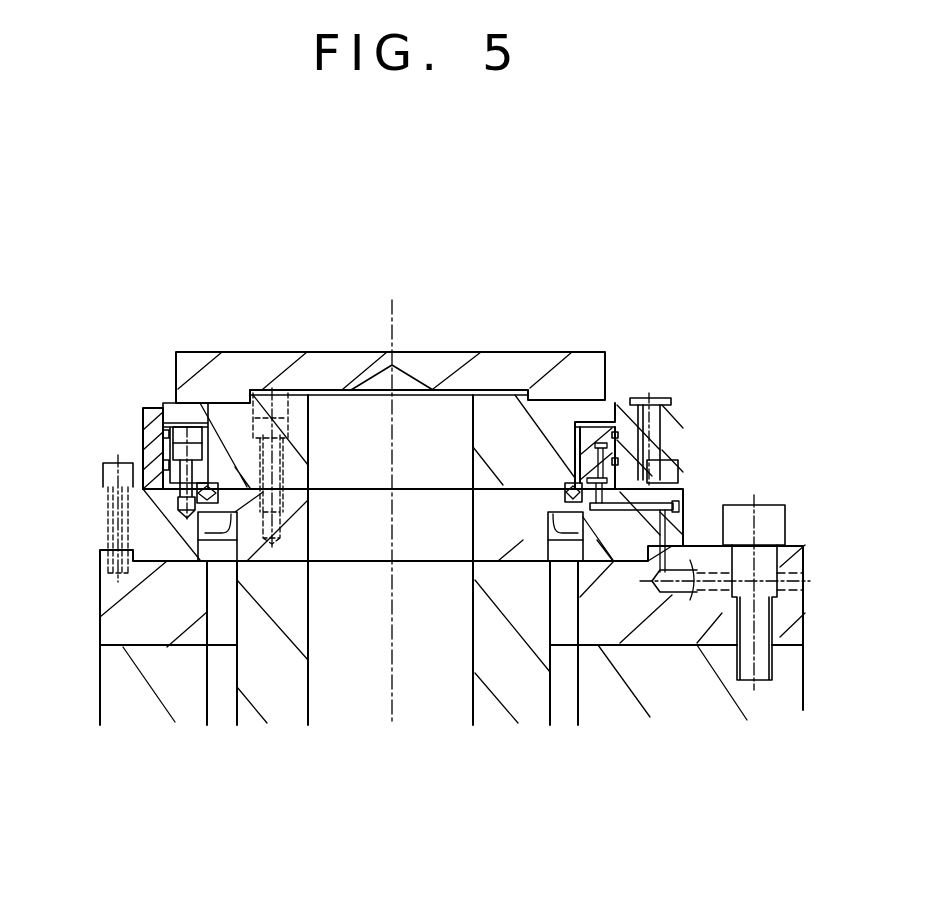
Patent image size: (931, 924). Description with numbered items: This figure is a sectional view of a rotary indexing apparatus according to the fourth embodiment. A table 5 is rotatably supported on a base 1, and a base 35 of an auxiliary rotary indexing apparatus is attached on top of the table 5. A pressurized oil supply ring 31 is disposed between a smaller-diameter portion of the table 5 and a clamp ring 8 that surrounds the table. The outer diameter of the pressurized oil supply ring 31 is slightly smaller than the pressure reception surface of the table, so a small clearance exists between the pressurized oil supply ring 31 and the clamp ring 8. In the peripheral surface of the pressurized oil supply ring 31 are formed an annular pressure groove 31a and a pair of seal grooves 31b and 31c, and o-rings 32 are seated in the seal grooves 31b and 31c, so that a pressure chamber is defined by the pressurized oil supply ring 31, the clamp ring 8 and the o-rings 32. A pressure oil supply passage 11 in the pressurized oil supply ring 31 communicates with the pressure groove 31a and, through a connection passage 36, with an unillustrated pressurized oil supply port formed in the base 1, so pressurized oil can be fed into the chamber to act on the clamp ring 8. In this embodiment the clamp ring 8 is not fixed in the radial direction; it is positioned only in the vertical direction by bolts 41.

The base 1 is at (785, 692).
The table 5 is at (499, 412).
The clamp ring 8 is at (157, 408).
The pressure oil supply passage 11 is at (572, 471).
The pressurized oil supply ring 31 is at (597, 435).
The annular pressure groove 31a is at (165, 436).
The seal groove 31b is at (157, 426).
The seal groove 31c is at (165, 468).
The o-rings 32 is at (619, 436).
The base of auxiliary rotary indexing apparatus 35 is at (546, 367).
The connection passage 36 is at (655, 497).
The bolts 41 is at (658, 397).